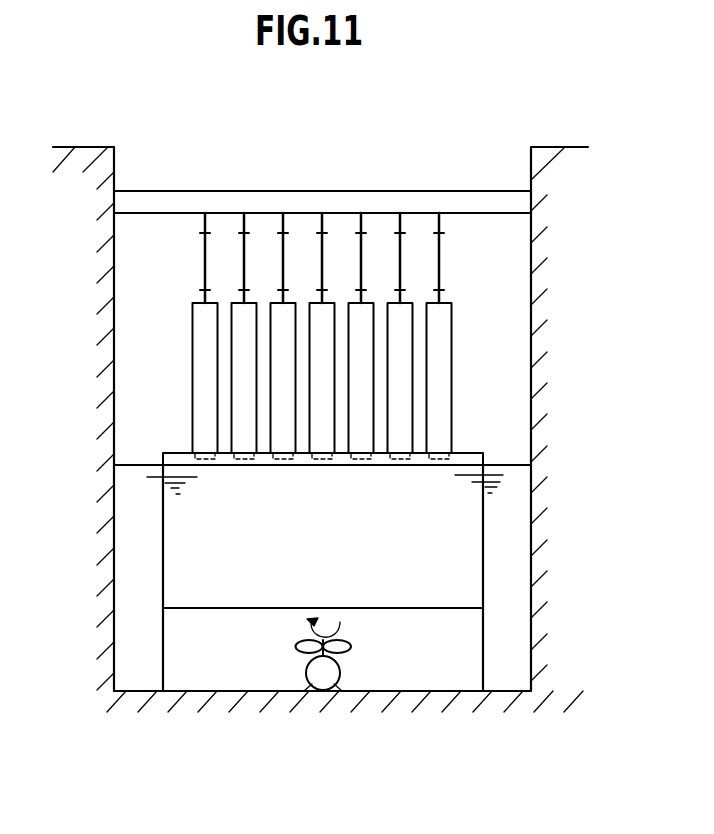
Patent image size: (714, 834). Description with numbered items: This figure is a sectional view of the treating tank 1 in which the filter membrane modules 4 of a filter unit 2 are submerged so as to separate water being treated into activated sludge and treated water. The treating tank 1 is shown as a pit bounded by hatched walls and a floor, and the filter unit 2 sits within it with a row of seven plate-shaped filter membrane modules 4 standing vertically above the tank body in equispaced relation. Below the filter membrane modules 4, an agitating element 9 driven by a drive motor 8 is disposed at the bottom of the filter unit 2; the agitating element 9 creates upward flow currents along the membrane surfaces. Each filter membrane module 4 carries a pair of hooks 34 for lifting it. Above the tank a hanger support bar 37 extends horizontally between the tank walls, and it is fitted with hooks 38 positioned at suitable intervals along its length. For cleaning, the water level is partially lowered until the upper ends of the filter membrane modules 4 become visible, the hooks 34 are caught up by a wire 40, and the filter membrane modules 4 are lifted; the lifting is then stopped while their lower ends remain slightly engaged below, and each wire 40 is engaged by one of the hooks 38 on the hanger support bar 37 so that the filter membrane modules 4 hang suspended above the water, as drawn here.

The treating tank 1 is at (507, 590).
The filter unit 2 is at (463, 543).
The filter membrane module 4 is at (437, 383).
The drive motor 8 is at (340, 673).
The agitating element 9 is at (303, 648).
The hook 34 is at (203, 293).
The hanger support bar 37 is at (173, 207).
The hook 38 is at (207, 223).
The wire 40 is at (285, 252).